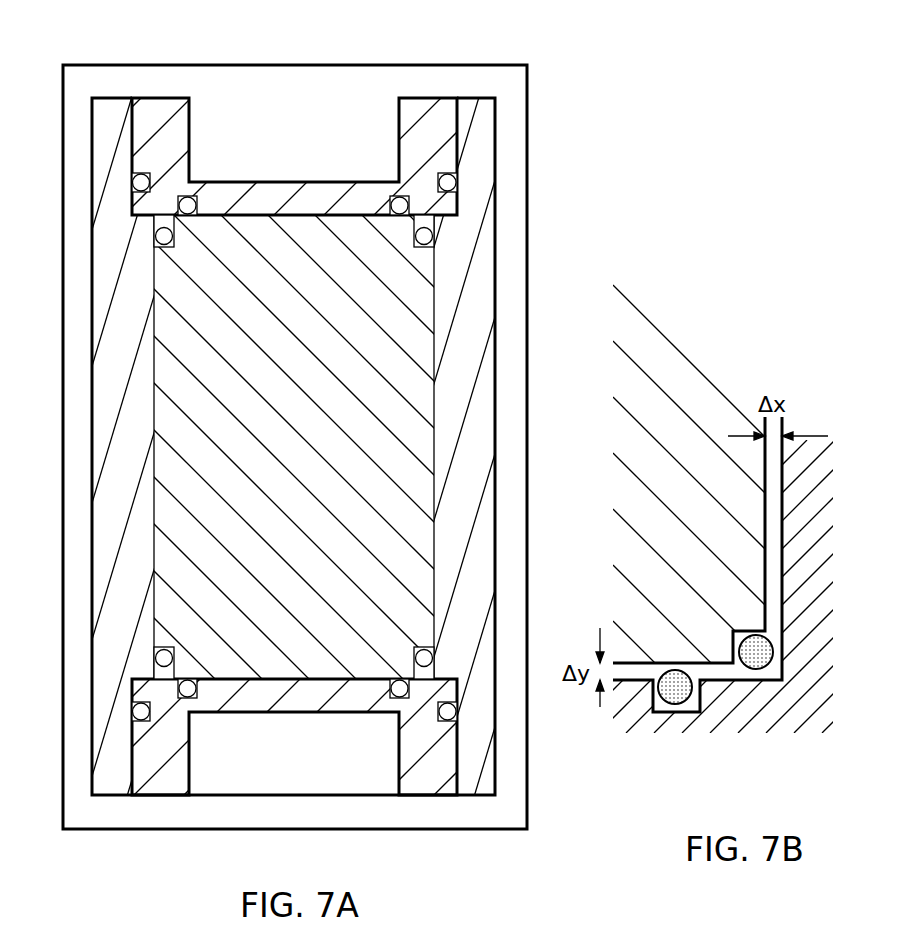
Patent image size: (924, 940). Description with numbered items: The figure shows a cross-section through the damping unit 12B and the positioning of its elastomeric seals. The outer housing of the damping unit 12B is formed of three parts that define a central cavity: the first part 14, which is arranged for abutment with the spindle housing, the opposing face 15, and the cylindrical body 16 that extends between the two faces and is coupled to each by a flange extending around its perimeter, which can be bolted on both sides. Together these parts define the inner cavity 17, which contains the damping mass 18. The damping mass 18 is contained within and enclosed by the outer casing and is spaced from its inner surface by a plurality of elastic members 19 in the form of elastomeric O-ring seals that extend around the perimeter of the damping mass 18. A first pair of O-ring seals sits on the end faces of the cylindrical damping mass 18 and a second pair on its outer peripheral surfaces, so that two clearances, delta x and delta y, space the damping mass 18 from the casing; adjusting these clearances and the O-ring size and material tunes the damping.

In FIG. 7A, the damping unit 12B is at (510, 258).
In FIG. 7A, the first part 14 is at (108, 130).
In FIG. 7A, the opposing face 15 is at (485, 123).
In FIG. 7B, the opposing face 15 is at (817, 645).
In FIG. 7A, the cylindrical body 16 is at (425, 135).
In FIG. 7A, the inner cavity 17 is at (148, 515).
In FIG. 7A, the damping mass 18 is at (187, 343).
In FIG. 7B, the damping mass 18 is at (670, 377).
In FIG. 7A, the elastic members 19 is at (428, 237).
In FIG. 7B, the elastic members 19 is at (678, 695).